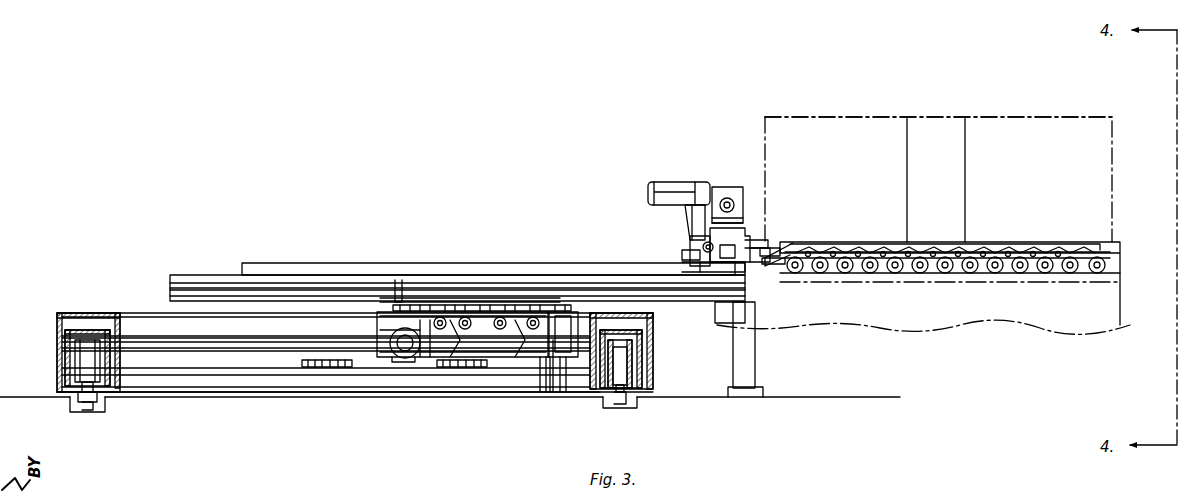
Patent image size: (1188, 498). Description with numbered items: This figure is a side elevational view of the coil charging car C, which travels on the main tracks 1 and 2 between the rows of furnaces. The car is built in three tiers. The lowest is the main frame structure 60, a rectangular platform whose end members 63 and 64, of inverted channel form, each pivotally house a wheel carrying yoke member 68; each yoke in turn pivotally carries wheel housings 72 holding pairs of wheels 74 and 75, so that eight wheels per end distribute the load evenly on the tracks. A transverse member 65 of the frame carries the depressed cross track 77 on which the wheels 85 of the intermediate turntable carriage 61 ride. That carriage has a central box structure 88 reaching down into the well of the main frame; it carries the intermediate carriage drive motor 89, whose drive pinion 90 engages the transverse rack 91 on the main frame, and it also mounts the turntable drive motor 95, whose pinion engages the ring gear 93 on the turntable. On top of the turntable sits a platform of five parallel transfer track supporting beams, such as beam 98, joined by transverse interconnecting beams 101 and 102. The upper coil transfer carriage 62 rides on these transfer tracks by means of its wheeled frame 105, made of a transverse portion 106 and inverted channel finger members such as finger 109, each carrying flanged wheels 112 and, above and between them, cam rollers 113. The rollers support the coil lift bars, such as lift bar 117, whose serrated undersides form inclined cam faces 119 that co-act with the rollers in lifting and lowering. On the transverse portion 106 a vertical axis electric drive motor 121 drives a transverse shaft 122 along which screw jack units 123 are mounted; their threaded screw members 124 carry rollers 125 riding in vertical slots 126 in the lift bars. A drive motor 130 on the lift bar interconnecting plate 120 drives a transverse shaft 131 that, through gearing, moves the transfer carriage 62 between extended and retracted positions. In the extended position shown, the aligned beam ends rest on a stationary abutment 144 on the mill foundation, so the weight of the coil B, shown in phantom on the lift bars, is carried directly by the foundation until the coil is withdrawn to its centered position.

The main track 1 is at (93, 403).
The main track 2 is at (603, 405).
The main frame structure 60 is at (92, 313).
The intermediate turntable carriage 61 is at (168, 276).
The upper coil transfer carriage 62 is at (688, 238).
The end member 63 is at (57, 326).
The end member 64 is at (656, 318).
The transverse member 65 is at (138, 322).
The wheel carrying yoke member 68 is at (72, 340).
The wheel housing 72 is at (86, 371).
The wheel 74 is at (70, 396).
The wheel 75 is at (621, 369).
The cross track 77 is at (152, 339).
The wheels 85 is at (526, 290).
The central box structure 88 is at (562, 350).
The intermediate carriage drive motor 89 is at (543, 338).
The drive pinion 90 is at (556, 345).
The rack 91 is at (320, 366).
The ring gear 93 is at (488, 306).
The turntable drive motor 95 is at (406, 362).
The transfer car track supporting beam 98 is at (202, 288).
The transverse interconnecting beam 101 is at (400, 295).
The transverse interconnecting beam 102 is at (571, 315).
The wheeled frame 105 is at (775, 270).
The transverse portion 106 is at (680, 264).
The finger member 109 is at (975, 272).
The flanged wheel 112 is at (898, 270).
The cam roller 113 is at (936, 252).
The coil lift bar 117 is at (1050, 243).
The inclined cam face 119 is at (1020, 250).
The lift bar interconnecting plate 120 is at (718, 240).
The vertical axis electric drive motor 121 is at (690, 215).
The transverse shaft 122 is at (732, 248).
The screw jack unit 123 is at (722, 268).
The threaded screw member 124 is at (742, 266).
The roller 125 is at (772, 258).
The vertical slot 126 is at (770, 247).
The drive motor 130 is at (680, 185).
The transverse shaft 131 is at (730, 197).
The stationary abutment 144 is at (733, 350).
The coil B is at (878, 112).
The coil charging car C is at (237, 395).